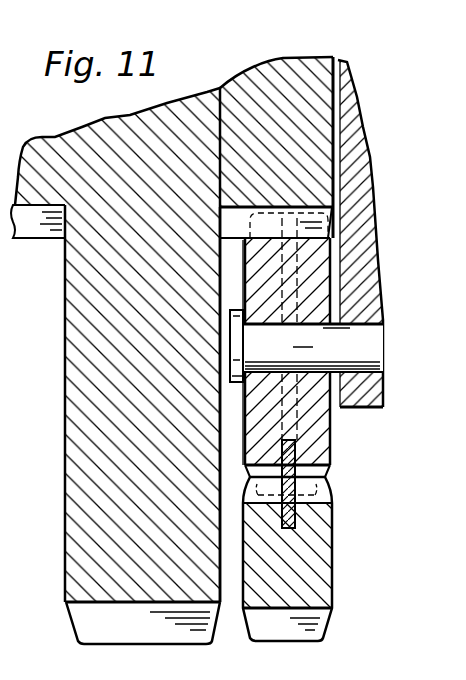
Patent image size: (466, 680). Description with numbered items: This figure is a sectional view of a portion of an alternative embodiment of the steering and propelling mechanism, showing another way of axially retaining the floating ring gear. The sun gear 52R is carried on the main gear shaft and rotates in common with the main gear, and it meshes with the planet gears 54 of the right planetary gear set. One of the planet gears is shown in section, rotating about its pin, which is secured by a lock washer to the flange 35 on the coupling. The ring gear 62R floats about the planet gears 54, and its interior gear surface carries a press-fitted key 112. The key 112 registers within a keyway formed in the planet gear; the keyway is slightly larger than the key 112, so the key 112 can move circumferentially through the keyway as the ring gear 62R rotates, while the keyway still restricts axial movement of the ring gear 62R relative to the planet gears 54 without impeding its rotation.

The sun gear 52R is at (277, 82).
The planet gears 54 is at (75, 485).
The flange 35 is at (355, 212).
The key 112 is at (290, 488).
The ring gear 62R is at (298, 545).